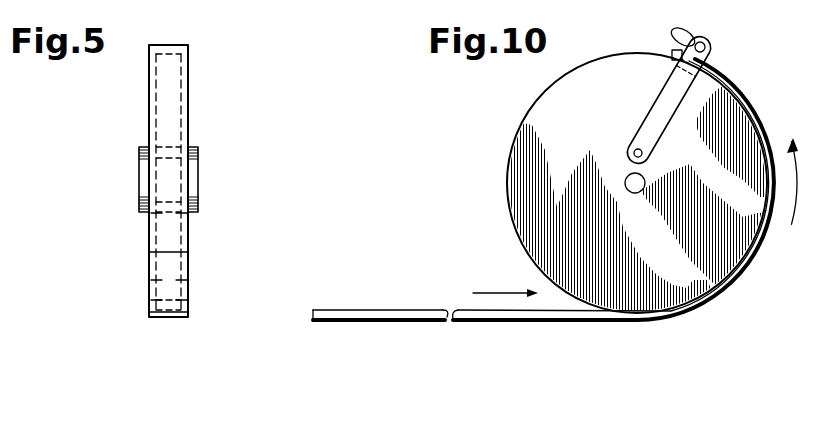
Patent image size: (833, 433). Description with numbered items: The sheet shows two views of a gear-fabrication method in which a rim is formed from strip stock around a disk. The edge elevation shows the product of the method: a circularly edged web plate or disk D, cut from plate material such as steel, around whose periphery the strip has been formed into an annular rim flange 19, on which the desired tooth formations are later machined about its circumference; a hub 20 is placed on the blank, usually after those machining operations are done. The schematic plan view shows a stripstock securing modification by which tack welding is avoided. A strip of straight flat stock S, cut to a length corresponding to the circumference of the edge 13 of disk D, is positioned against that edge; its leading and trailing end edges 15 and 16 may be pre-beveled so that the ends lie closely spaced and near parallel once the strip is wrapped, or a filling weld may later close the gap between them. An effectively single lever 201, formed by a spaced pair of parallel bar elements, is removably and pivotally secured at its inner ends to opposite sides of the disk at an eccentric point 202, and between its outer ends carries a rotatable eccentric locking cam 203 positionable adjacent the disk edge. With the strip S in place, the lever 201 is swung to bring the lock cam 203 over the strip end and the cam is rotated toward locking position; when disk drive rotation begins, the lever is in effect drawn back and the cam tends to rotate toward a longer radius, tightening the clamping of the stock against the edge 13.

In FIG. 5, the rim flange 19 is at (189, 90).
In FIG. 5, the hub 20 is at (140, 150).
In FIG. 5, the web plate or disk D is at (156, 266).
In FIG. 10, the web plate or disk D is at (578, 131).
In FIG. 10, the edge of disk 13 is at (508, 194).
In FIG. 10, the leading end edge of strip 15 is at (672, 54).
In FIG. 10, the trailing end edge of strip 16 is at (313, 316).
In FIG. 10, the strip of straight flat stock S is at (406, 296).
In FIG. 10, the lever 201 is at (657, 98).
In FIG. 10, the eccentric point 202 is at (642, 150).
In FIG. 10, the rotatable eccentric locking cam 203 is at (686, 33).